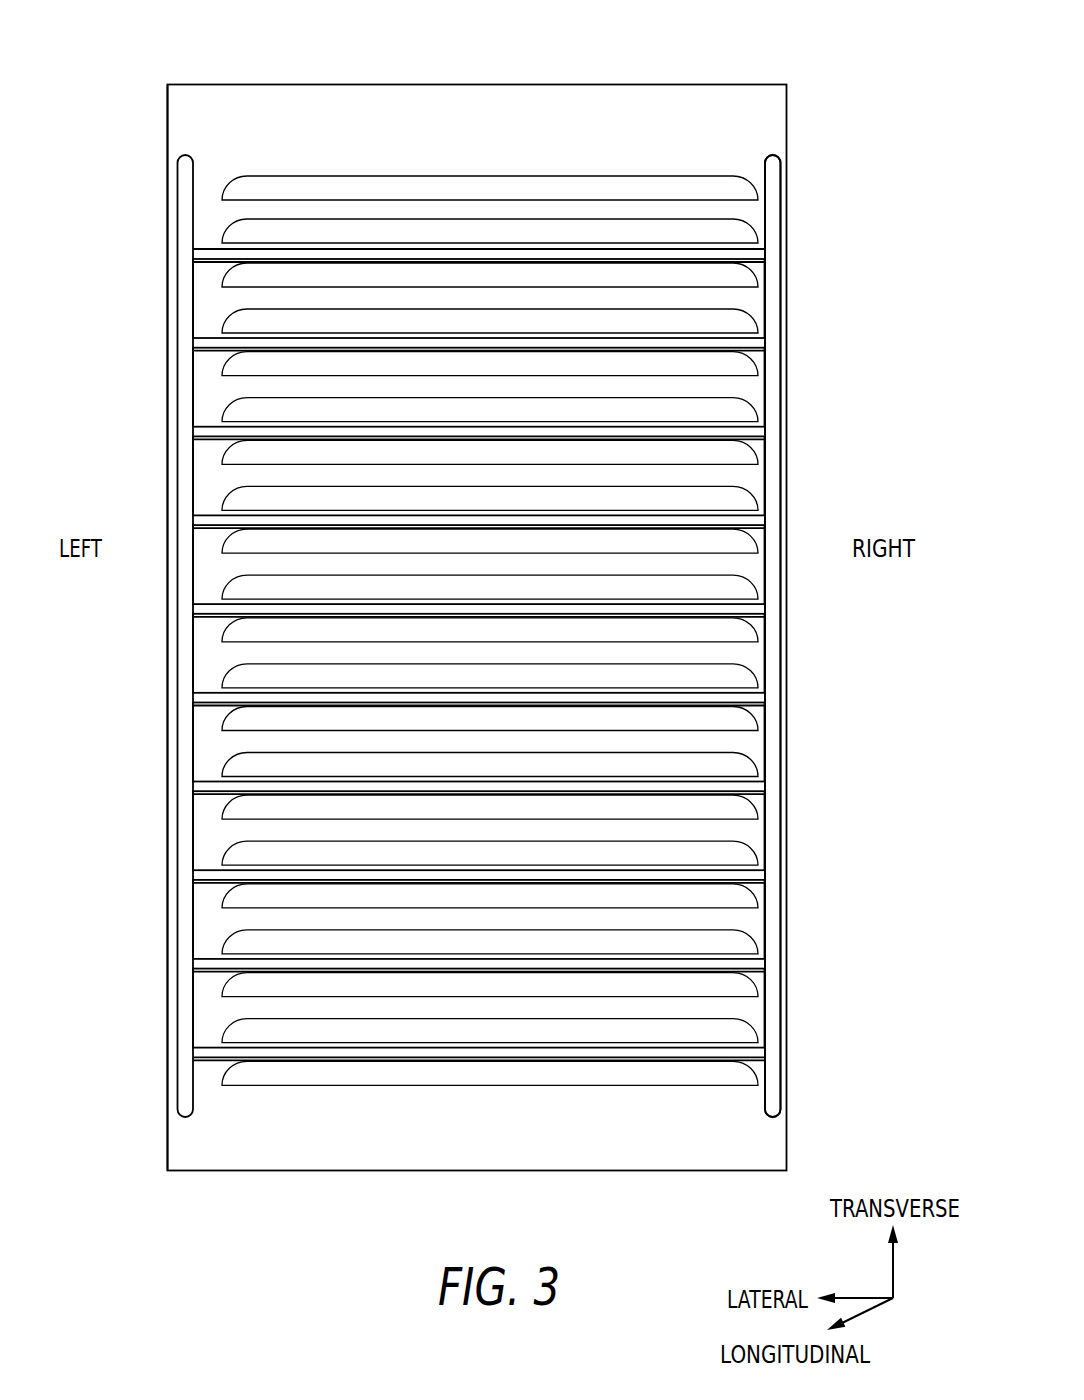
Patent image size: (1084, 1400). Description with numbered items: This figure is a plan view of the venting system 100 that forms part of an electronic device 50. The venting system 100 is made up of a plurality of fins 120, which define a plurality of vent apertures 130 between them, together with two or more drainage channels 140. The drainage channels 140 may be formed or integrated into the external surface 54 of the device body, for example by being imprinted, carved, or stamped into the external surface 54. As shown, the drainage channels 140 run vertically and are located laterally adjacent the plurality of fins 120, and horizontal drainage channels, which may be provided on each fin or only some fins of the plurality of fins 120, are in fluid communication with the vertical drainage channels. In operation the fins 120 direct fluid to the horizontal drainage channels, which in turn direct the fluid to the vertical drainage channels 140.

The electronic device 50 is at (657, 85).
The external surface 54 is at (160, 620).
The venting system 100 is at (805, 172).
The fins 120 is at (715, 627).
The vent apertures 130 is at (733, 273).
The drainage channels 140 is at (357, 240).